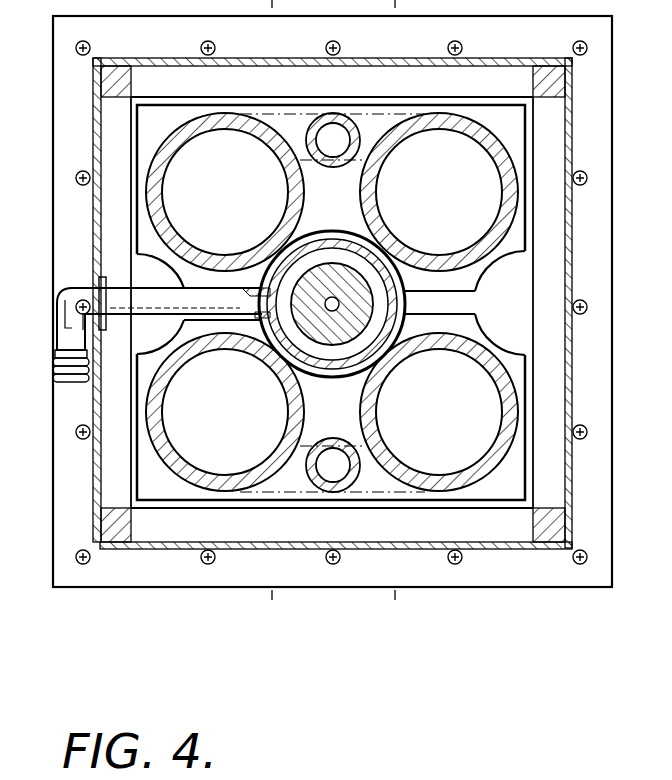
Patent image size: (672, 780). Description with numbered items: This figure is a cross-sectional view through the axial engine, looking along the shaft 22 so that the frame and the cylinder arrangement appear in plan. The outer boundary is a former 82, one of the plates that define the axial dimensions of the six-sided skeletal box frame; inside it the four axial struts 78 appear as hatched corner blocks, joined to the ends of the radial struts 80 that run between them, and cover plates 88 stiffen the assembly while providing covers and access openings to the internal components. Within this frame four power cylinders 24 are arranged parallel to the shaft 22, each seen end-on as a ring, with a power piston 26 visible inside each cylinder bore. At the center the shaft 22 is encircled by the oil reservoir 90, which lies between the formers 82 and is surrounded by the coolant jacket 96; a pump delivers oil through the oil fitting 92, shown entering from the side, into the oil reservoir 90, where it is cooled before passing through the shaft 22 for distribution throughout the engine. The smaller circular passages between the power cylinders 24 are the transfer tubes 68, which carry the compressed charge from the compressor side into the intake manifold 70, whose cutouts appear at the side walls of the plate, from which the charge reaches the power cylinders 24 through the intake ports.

The shaft 22 is at (337, 340).
The power cylinder 24 is at (178, 140).
The power piston 26 is at (236, 241).
The transfer tube 68 is at (333, 168).
The intake manifold 70 is at (170, 262).
The axial strut 78 is at (132, 85).
The radial strut 80 is at (570, 242).
The former 82 is at (612, 354).
The cover plate 88 is at (577, 487).
The oil reservoir 90 is at (382, 302).
The oil fitting 92 is at (75, 383).
The coolant jacket 96 is at (324, 231).